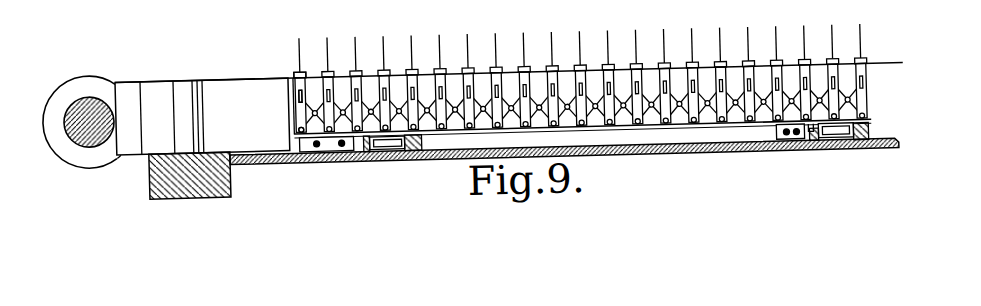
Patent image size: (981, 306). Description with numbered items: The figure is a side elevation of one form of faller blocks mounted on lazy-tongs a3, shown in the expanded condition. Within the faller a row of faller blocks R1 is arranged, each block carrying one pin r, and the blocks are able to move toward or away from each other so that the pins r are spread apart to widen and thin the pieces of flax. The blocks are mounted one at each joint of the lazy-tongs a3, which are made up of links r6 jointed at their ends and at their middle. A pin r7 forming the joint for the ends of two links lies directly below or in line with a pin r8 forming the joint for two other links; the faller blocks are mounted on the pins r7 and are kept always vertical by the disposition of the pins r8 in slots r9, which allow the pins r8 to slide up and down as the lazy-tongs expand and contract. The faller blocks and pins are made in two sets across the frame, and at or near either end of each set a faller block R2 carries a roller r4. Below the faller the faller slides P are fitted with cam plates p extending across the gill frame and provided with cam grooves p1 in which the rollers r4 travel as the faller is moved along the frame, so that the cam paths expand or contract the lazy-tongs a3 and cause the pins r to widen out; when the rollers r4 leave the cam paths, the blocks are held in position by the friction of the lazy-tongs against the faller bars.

The pin r is at (582, 76).
The faller block R1 is at (693, 87).
The faller block carrying roller R2 is at (383, 90).
The lazy-tongs a3 is at (449, 108).
The link r6 is at (483, 109).
The pin forming joint for ends of two links r7 is at (299, 136).
The pin forming joint for two other links r8 is at (297, 105).
The slot r9 is at (299, 98).
The cam plate p is at (862, 137).
The cam groove p1 is at (948, 83).
The roller r4 is at (407, 173).
The faller slide P is at (295, 167).